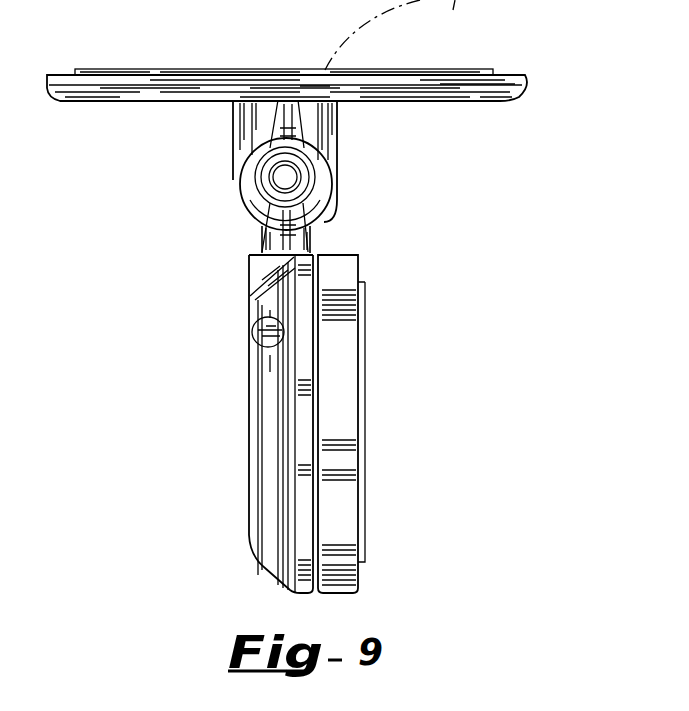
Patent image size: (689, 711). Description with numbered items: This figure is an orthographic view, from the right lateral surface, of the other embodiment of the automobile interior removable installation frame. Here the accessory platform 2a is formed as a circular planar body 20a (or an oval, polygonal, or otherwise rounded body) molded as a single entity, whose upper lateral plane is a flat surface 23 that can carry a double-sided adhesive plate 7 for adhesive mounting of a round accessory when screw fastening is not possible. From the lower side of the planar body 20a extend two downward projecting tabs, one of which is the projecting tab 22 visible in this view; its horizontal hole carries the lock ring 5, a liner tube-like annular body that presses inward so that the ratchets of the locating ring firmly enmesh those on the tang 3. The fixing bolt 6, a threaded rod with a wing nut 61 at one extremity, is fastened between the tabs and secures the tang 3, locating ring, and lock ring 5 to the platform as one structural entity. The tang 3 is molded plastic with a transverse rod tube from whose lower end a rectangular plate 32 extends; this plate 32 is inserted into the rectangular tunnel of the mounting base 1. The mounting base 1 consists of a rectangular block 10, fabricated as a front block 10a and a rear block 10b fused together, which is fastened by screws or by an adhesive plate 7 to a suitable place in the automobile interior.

The mounting base 1 is at (247, 391).
The accessory platform 2a is at (97, 106).
The tang 3 is at (322, 231).
The lock ring 5 is at (340, 158).
The fixing bolt 6 is at (250, 185).
The double-sided adhesive plate 7 is at (372, 417).
The rectangular block 10 is at (247, 446).
The front block 10a is at (262, 487).
The rear block 10b is at (337, 510).
The circular planar body 20a is at (455, 82).
The projecting tab 22 is at (247, 138).
The flat surface 23 is at (508, 76).
The rectangular plate 32 is at (262, 240).
The wing nut 61 is at (272, 206).